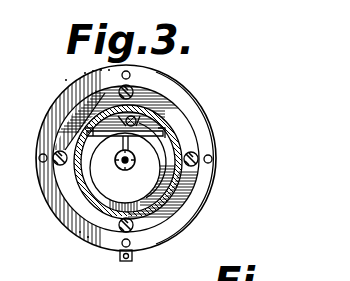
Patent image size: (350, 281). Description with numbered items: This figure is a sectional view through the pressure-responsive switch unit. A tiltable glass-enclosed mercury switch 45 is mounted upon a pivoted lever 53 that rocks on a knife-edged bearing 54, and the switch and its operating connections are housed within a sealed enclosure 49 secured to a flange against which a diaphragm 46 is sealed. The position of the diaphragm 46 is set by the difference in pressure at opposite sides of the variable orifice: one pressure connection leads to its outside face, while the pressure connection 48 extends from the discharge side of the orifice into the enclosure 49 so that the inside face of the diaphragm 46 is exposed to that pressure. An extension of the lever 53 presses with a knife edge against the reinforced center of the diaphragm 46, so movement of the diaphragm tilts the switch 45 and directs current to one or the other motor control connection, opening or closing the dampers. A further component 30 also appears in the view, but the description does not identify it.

The mounting ring with screws 30 is at (126, 172).
The mercury switch 45 is at (132, 112).
The enclosure 49 is at (155, 114).
The knife-edged bearing 54 is at (170, 122).
The pivoted lever 53 is at (137, 160).
The diaphragm 46 is at (168, 192).
The pressure connection 48 is at (134, 257).